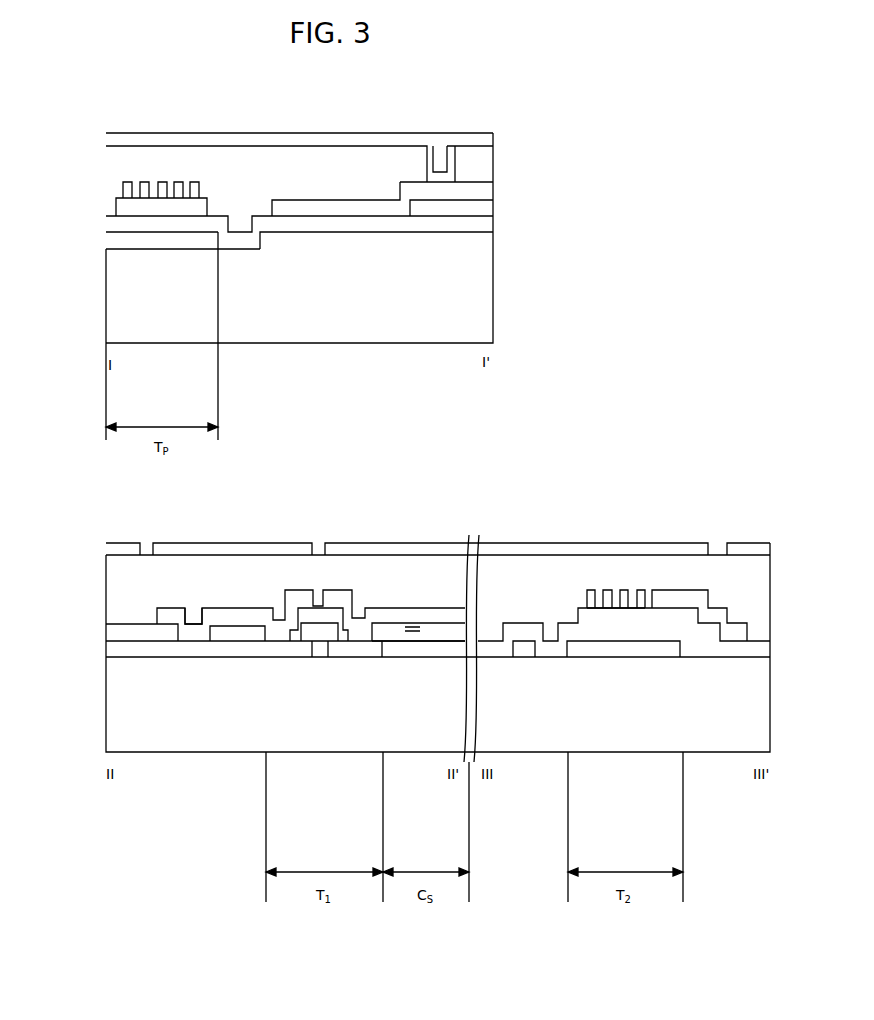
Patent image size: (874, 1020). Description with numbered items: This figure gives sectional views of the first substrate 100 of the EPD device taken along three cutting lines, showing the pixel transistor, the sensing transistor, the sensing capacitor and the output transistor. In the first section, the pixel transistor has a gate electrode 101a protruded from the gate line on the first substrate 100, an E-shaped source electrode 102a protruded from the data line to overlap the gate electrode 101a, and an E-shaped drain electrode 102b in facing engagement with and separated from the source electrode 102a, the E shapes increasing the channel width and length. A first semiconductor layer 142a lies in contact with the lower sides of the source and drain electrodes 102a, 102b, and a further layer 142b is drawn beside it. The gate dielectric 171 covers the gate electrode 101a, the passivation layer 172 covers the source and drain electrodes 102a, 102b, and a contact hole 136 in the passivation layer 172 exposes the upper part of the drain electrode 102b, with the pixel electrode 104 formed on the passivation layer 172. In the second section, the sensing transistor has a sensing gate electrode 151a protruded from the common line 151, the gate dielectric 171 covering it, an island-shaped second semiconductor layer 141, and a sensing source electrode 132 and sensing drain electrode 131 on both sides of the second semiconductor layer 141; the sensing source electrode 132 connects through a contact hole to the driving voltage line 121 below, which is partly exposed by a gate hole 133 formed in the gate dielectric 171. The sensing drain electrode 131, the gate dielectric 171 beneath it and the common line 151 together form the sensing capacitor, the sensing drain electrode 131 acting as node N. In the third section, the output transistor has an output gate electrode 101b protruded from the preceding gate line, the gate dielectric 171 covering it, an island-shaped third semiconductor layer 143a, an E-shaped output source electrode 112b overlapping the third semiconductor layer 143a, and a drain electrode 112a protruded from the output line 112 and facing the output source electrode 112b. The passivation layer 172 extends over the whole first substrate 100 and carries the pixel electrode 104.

The first substrate 100 is at (106, 709).
The gate electrode 101a is at (106, 240).
The output gate electrode 101b is at (665, 650).
The source electrode 102a is at (193, 195).
The drain electrode 102b is at (178, 182).
The pixel electrode 104 is at (685, 548).
The output line 112 is at (738, 632).
The drain electrode 112a is at (623, 614).
The output source electrode 112b is at (641, 590).
The driving voltage line 121 is at (522, 648).
The sensing drain electrode 131 is at (377, 618).
The sensing source electrode 132 is at (235, 615).
The gate hole 133 is at (195, 612).
The contact hole 136 is at (437, 133).
The second semiconductor layer 141 is at (338, 650).
The first semiconductor layer 142a is at (205, 197).
The second conductive pattern 142b is at (475, 205).
The third semiconductor layer 143a is at (705, 636).
The common line 151 is at (412, 650).
The sensing gate electrode 151a is at (320, 648).
The gate dielectric 171 is at (788, 663).
The passivation layer 172 is at (784, 578).